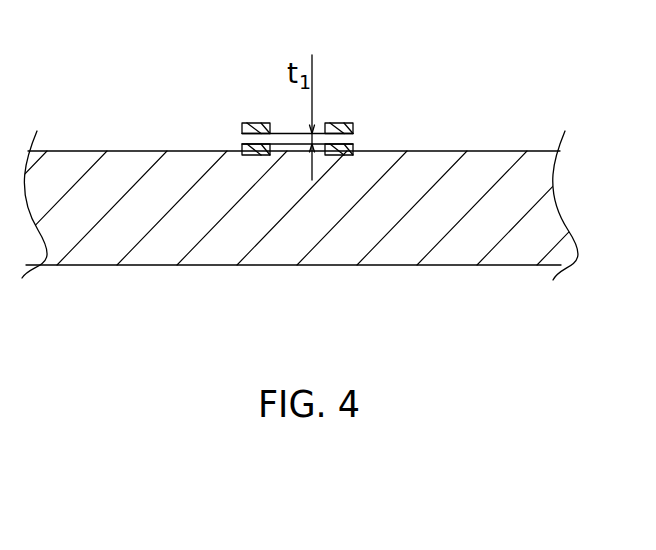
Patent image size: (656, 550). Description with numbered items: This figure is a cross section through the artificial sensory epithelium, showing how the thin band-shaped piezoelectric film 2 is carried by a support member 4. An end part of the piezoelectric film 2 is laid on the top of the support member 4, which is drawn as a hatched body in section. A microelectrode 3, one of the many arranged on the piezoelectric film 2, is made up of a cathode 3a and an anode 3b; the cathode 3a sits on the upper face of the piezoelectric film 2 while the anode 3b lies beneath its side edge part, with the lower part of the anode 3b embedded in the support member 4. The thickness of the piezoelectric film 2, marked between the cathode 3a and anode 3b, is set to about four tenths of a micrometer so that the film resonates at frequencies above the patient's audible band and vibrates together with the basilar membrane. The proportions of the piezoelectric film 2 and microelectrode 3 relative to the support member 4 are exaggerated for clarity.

The piezoelectric film 2 is at (282, 133).
The microelectrode 3 is at (297, 99).
The cathode 3a is at (242, 127).
The anode 3b is at (242, 147).
The support member 4 is at (224, 258).